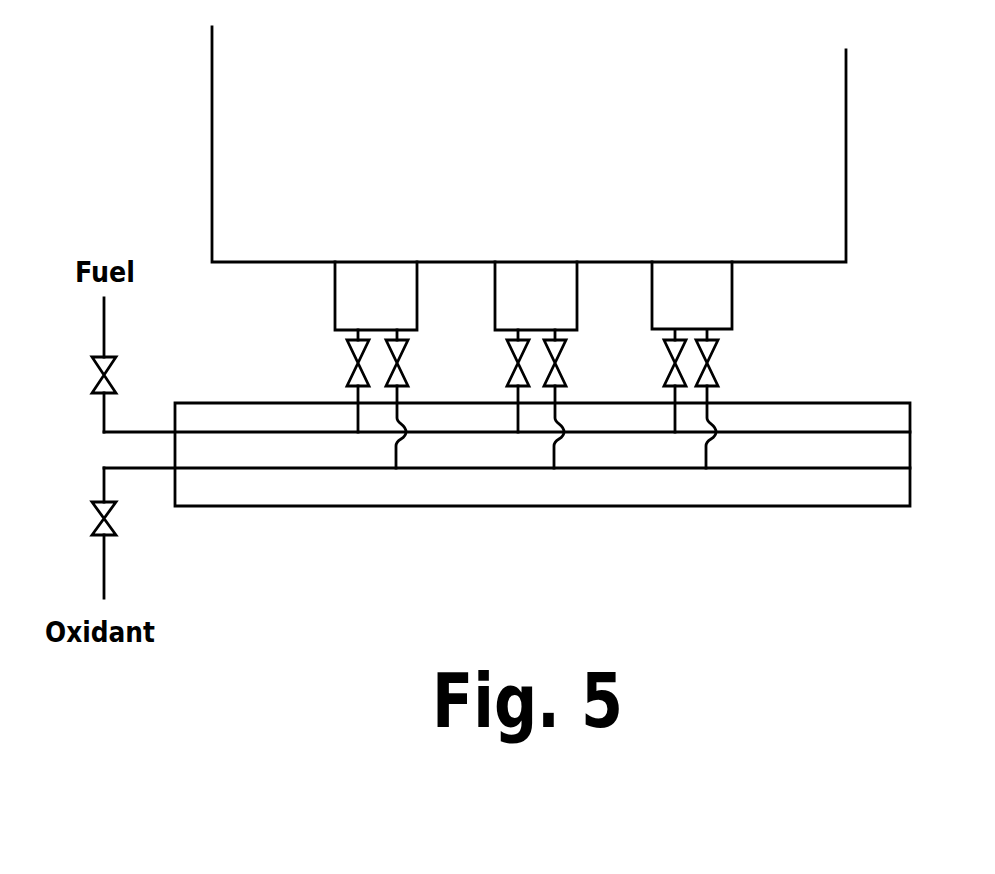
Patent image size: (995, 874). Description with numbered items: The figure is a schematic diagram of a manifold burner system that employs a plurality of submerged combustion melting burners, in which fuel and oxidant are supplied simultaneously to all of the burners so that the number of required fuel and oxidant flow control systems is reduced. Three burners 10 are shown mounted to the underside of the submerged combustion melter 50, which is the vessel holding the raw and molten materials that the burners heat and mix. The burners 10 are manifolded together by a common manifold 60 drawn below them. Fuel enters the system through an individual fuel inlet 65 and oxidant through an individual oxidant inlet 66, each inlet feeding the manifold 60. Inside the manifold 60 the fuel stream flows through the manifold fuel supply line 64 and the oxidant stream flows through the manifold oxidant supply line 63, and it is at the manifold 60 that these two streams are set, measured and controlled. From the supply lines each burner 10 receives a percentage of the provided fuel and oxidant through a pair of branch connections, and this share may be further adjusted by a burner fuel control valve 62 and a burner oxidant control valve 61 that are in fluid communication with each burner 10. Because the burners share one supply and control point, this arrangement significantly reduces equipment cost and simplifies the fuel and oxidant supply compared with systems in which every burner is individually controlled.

The burner 10 is at (733, 283).
The submerged combustion melter 50 is at (211, 92).
The manifold 60 is at (820, 507).
The burner oxidant control valve 61 is at (716, 350).
The burner fuel control valve 62 is at (669, 356).
The manifold oxidant supply line 63 is at (252, 469).
The manifold fuel supply line 64 is at (222, 430).
The fuel inlet 65 is at (92, 372).
The oxidant inlet 66 is at (92, 520).